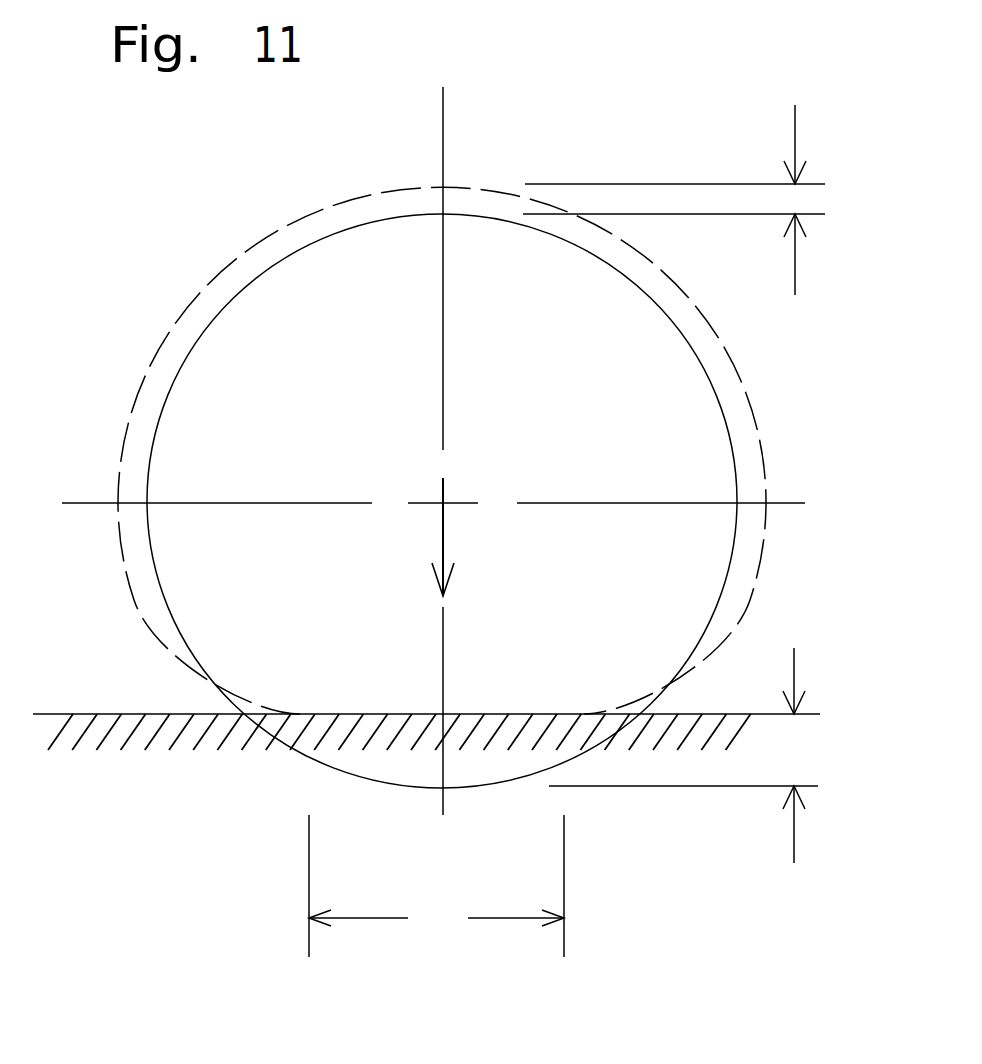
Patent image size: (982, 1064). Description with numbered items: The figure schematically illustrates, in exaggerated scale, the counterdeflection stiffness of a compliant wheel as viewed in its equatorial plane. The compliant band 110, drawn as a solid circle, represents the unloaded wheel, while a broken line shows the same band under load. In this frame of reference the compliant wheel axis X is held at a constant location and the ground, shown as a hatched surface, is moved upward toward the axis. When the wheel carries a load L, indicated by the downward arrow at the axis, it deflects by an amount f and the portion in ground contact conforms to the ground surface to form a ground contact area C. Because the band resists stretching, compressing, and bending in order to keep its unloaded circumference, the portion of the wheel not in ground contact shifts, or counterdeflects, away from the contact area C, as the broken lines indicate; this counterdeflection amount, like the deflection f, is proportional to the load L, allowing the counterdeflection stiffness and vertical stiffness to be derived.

The compliant band 110 is at (233, 302).
The compliant wheel axis X is at (443, 500).
The load L is at (460, 537).
The vertical deflection f is at (683, 755).
The ground contact area C is at (436, 886).